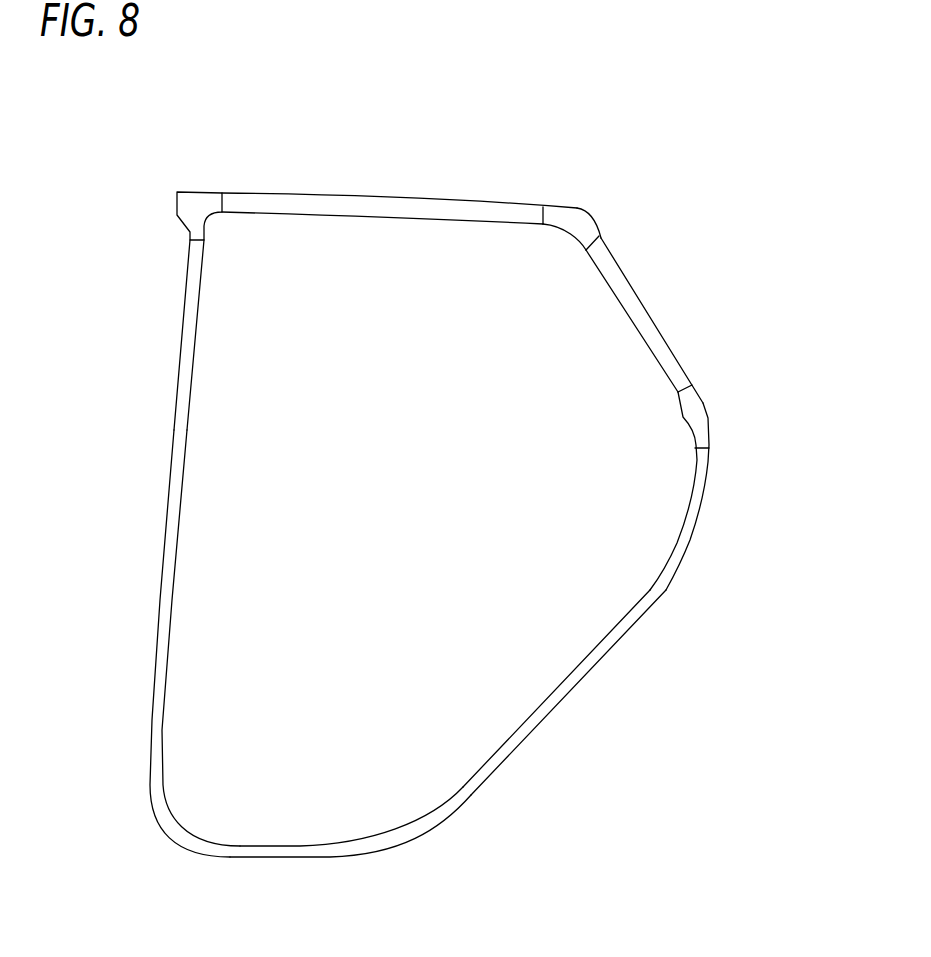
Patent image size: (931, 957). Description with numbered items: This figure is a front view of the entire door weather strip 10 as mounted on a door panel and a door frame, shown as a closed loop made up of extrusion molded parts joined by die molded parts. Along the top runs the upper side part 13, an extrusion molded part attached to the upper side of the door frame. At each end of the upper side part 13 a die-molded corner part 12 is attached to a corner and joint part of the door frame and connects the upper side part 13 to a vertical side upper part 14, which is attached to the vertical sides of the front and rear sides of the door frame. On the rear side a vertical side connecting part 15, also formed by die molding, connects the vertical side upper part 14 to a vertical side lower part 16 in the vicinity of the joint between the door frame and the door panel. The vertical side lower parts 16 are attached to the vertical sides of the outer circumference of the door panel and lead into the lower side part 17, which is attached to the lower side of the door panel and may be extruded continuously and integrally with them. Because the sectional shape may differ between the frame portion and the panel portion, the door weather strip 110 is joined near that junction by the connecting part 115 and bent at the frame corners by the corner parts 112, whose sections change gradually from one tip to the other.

The door weather strip 10 is at (433, 520).
The door weather strip 110 is at (433, 520).
The corner part 12 is at (420, 172).
The corner part 112 is at (195, 190).
The upper side part 13 is at (353, 196).
The vertical side upper part 14 is at (627, 282).
The vertical side connecting part 15 is at (706, 436).
The connecting part 115 is at (705, 400).
The vertical side lower part 16 is at (168, 558).
The lower side part 17 is at (277, 855).